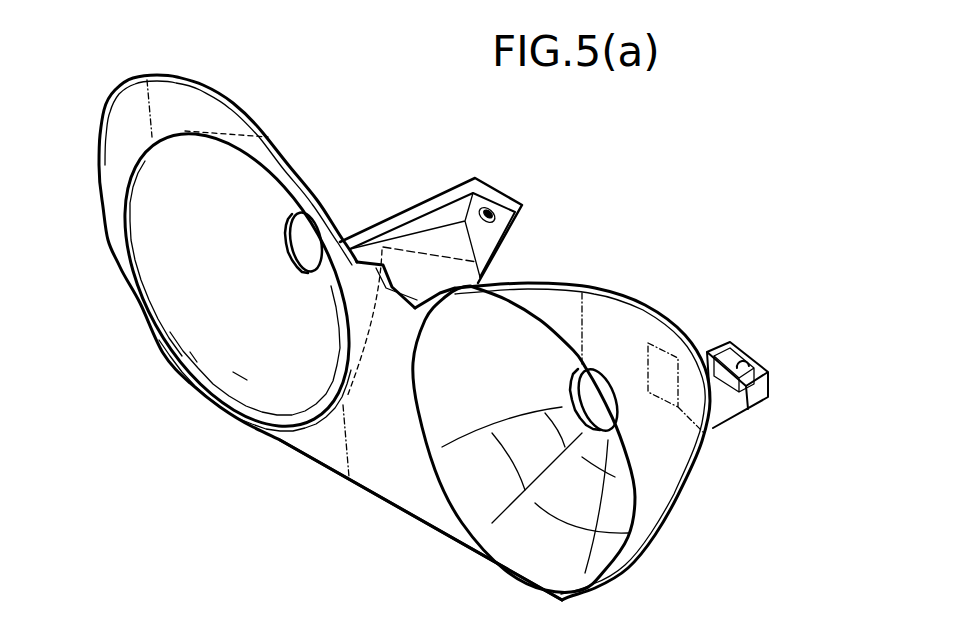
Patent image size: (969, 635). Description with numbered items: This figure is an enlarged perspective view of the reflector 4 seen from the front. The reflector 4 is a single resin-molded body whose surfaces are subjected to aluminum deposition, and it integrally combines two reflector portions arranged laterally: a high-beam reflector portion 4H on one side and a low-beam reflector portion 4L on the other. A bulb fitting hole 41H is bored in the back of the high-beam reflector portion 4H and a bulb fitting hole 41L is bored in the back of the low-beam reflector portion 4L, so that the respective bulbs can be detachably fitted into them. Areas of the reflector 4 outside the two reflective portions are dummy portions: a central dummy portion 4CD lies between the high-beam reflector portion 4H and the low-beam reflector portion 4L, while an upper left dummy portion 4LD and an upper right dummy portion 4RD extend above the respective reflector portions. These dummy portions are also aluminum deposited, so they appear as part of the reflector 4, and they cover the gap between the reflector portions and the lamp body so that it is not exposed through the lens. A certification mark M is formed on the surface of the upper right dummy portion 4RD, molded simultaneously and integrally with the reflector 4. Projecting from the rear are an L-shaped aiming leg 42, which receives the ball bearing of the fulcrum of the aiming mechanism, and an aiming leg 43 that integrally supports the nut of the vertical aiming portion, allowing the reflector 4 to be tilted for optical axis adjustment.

The reflector 4 is at (161, 358).
The upper left dummy portion 4LD is at (198, 110).
The high-beam reflector portion 4H is at (245, 390).
The central dummy portion 4CD is at (368, 462).
The low-beam reflector portion 4L is at (514, 543).
The upper right dummy portion 4RD is at (593, 335).
The bulb fitting hole 41H is at (292, 237).
The bulb fitting hole 41L is at (600, 430).
The L-shaped aiming leg 42 is at (513, 236).
The aiming leg 43 is at (748, 397).
The certification mark M is at (703, 437).